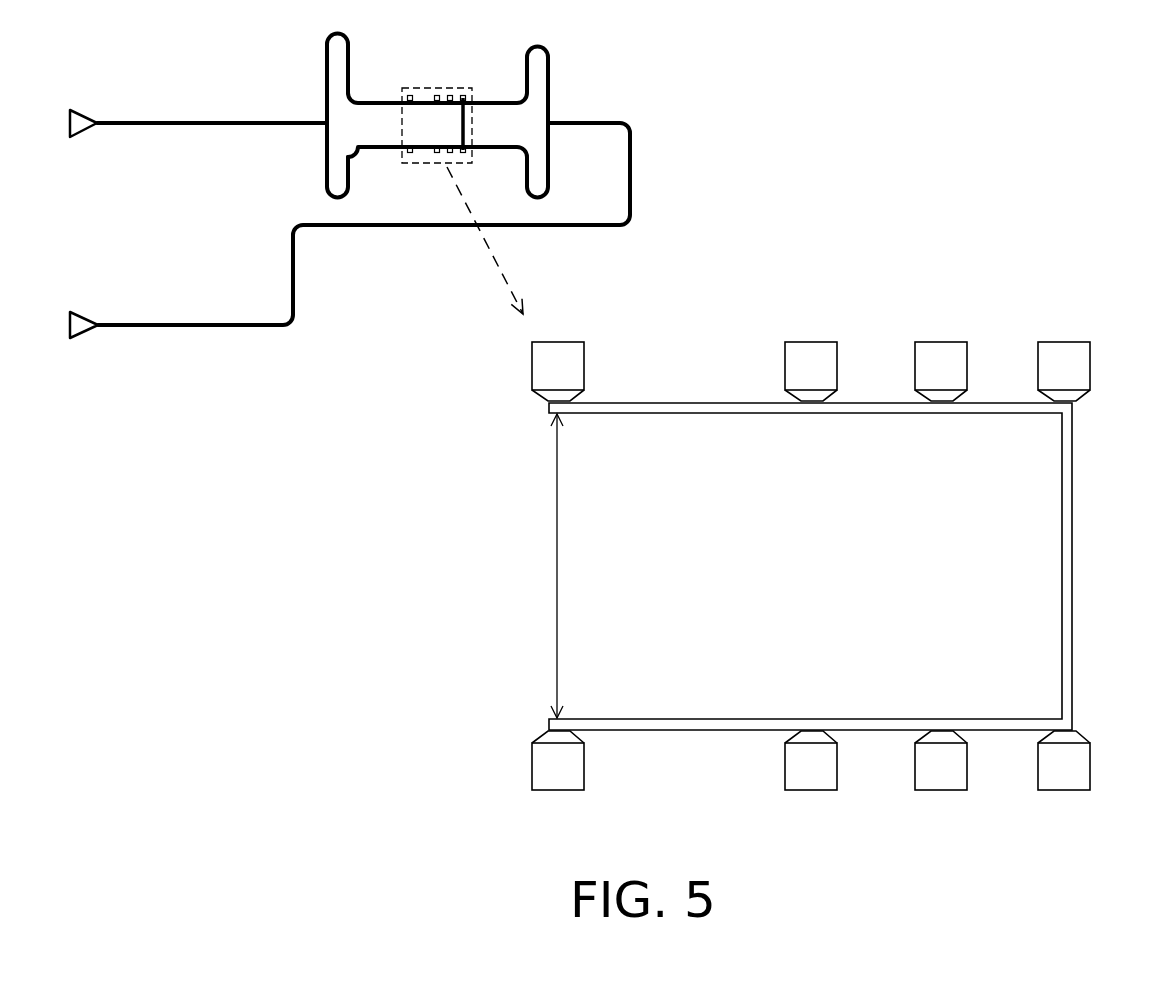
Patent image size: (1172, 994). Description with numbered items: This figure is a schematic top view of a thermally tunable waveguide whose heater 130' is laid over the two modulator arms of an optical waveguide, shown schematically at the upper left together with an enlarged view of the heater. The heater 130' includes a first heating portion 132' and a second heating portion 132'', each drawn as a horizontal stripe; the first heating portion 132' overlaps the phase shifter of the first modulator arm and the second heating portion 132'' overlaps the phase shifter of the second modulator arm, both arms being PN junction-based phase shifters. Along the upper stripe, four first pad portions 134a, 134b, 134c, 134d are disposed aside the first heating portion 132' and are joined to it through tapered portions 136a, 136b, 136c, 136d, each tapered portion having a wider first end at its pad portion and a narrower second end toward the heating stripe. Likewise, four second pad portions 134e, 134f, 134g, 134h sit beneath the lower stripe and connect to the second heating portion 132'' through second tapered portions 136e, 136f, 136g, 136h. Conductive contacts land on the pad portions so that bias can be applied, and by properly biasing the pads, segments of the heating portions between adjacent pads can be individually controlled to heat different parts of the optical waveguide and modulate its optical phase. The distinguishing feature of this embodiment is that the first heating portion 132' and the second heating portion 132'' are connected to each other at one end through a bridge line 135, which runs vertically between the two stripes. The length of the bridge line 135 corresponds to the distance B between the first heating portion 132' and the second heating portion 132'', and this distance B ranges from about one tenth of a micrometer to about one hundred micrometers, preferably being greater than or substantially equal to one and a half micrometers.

The first pad portion 134a is at (561, 355).
The first pad portion 134b is at (813, 355).
The first pad portion 134c is at (945, 355).
The first pad portion 134d is at (1065, 355).
The second pad portion 134e is at (562, 780).
The second pad portion 134f is at (813, 780).
The second pad portion 134g is at (945, 780).
The second pad portion 134h is at (1065, 780).
The tapered portion 136a is at (568, 398).
The tapered portion 136b is at (797, 398).
The tapered portion 136c is at (949, 398).
The tapered portion 136d is at (1074, 401).
The second tapered portion 136e is at (568, 733).
The second tapered portion 136f is at (797, 733).
The second tapered portion 136g is at (950, 733).
The second tapered portion 136h is at (1074, 733).
The first heating portion 132' is at (810, 472).
The second heating portion 132'' is at (810, 668).
The heater 130' is at (810, 566).
The bridge line 135 is at (1065, 567).
The distance B is at (549, 566).